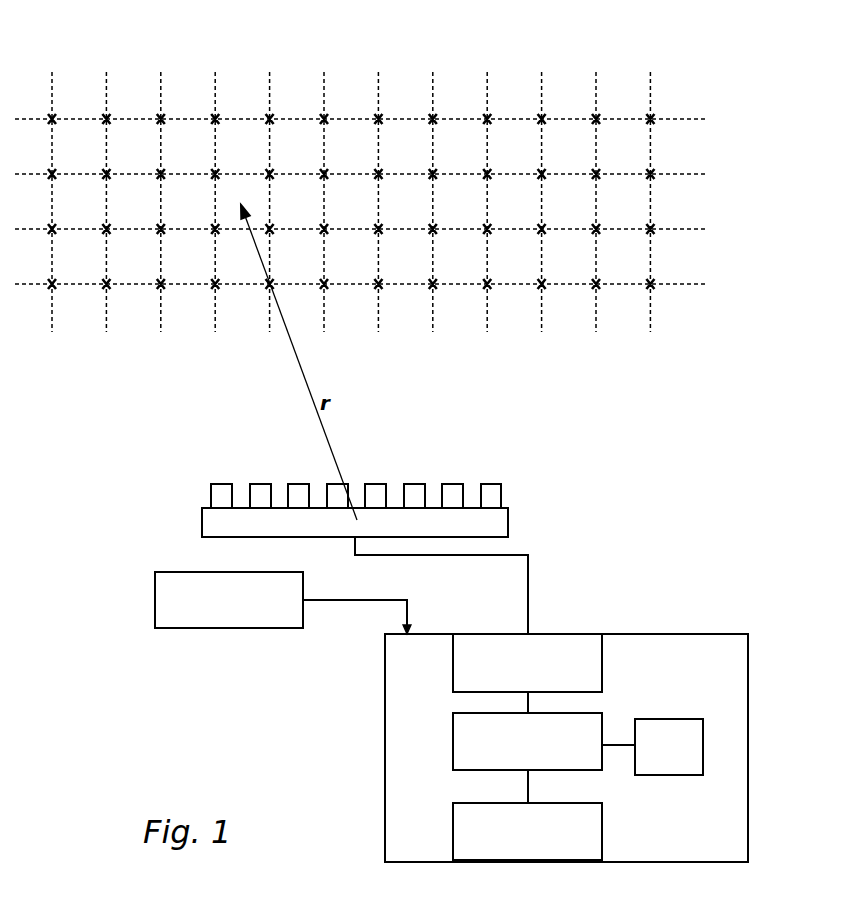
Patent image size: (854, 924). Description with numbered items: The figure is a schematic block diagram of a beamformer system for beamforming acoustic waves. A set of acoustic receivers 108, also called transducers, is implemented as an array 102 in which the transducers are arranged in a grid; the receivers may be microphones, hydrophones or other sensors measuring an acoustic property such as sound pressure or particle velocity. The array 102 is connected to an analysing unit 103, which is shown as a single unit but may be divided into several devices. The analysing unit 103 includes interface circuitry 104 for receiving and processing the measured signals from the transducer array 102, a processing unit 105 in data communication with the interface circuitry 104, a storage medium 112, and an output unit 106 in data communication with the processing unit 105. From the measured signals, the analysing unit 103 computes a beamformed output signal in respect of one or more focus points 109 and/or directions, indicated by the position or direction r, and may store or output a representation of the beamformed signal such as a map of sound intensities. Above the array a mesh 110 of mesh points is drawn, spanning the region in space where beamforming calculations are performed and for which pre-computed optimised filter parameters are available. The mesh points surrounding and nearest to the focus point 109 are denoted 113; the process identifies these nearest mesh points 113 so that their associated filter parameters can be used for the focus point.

The array of transducers 102 is at (508, 520).
The analysing unit 103 is at (385, 745).
The interface circuitry 104 is at (550, 675).
The processing unit 105 is at (550, 754).
The output unit 106 is at (550, 844).
The acoustic receivers 108 is at (330, 484).
The focus point 109 is at (241, 207).
The mesh 110 is at (517, 72).
The storage medium 112 is at (691, 759).
The nearest mesh points 113 is at (213, 228).